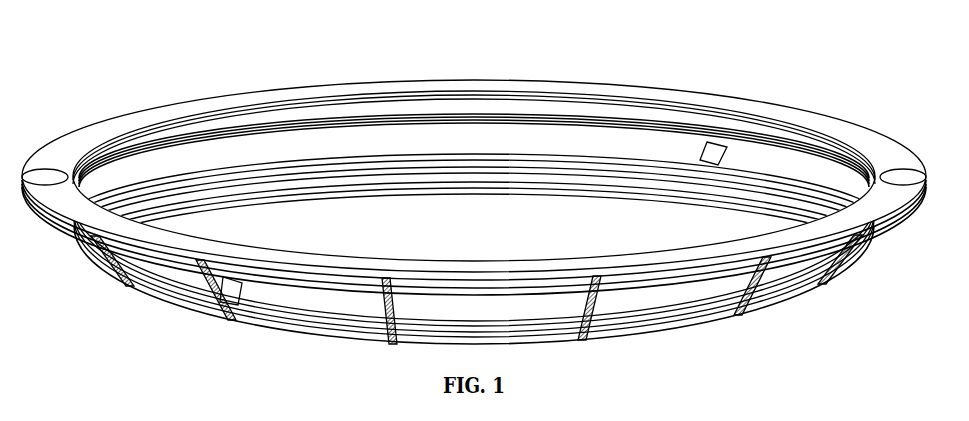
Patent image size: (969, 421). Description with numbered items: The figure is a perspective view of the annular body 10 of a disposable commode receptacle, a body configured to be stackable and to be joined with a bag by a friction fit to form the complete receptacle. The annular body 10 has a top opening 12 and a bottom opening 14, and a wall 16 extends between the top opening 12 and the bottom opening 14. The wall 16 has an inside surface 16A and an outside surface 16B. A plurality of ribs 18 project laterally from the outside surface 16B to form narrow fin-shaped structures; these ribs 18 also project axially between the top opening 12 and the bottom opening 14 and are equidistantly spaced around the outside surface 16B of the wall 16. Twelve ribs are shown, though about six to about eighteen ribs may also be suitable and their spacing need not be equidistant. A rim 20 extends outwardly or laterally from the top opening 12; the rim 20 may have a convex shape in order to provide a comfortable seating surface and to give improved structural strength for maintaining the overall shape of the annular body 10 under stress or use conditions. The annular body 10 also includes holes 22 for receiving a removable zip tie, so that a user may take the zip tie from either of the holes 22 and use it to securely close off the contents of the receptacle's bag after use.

The annular body 10 is at (650, 74).
The top opening 12 is at (263, 108).
The bottom opening 14 is at (347, 195).
The wall 16 is at (527, 140).
The inside surface 16A is at (140, 180).
The outside surface 16B is at (152, 269).
The ribs 18 is at (222, 311).
The rim 20 is at (798, 117).
The holes 22 is at (707, 153).